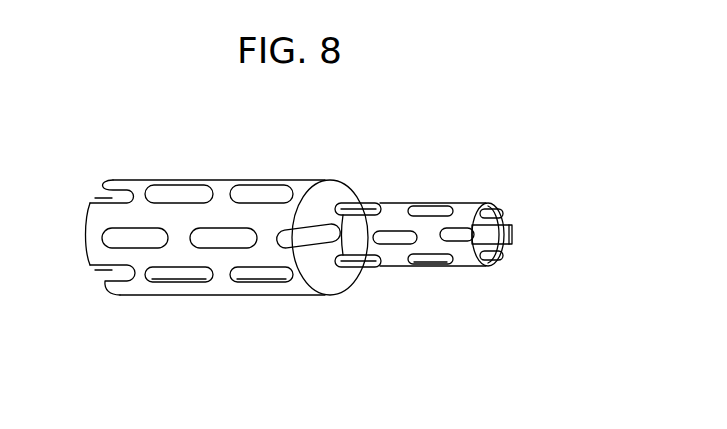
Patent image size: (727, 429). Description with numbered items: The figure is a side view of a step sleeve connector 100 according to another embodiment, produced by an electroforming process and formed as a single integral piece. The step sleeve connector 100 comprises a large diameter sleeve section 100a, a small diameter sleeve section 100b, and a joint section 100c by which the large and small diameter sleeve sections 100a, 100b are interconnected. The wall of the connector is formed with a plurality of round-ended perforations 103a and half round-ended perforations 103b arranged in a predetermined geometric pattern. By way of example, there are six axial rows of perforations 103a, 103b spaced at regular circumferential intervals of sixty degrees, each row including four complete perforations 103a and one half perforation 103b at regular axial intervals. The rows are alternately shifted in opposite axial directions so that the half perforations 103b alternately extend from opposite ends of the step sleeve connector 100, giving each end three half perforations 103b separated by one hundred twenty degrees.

The step sleeve connector 100 is at (406, 130).
The large diameter sleeve section 100a is at (138, 178).
The small diameter sleeve section 100b is at (466, 204).
The joint section 100c is at (346, 188).
The round-ended perforations 103a is at (253, 278).
The half round-ended perforations 103b is at (104, 268).